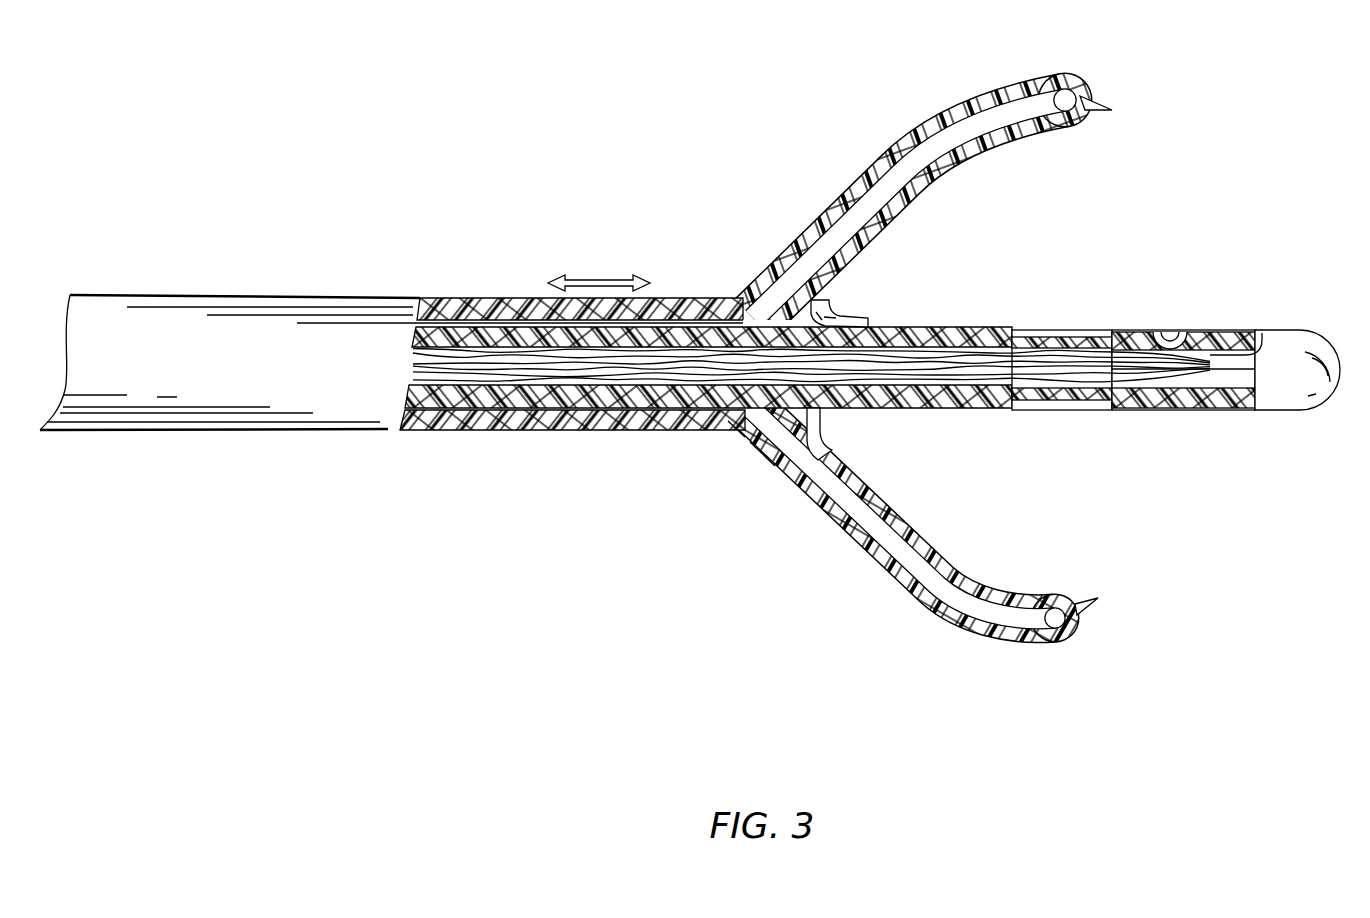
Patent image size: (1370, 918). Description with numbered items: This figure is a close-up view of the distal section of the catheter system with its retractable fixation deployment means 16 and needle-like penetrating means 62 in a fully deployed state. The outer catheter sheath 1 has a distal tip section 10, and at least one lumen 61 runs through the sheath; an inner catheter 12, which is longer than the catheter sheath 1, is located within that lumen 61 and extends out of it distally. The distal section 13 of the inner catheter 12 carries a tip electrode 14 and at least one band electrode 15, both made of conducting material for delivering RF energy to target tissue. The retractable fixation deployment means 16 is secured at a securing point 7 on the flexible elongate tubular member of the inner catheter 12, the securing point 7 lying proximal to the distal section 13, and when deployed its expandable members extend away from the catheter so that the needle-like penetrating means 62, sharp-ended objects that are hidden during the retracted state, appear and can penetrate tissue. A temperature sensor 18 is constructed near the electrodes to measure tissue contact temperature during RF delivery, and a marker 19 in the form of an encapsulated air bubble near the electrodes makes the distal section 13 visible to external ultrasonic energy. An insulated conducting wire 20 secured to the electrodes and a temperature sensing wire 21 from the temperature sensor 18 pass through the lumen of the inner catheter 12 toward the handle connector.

The catheter sheath 1 is at (450, 300).
The securing point 7 is at (873, 312).
The distal tip section 10 is at (760, 467).
The inner catheter 12 is at (520, 428).
The distal section of the inner catheter 13 is at (963, 410).
The tip electrode 14 is at (1313, 318).
The band electrode 15 is at (1085, 318).
The retractable fixation deployment means 16 is at (887, 147).
The temperature sensor 18 is at (1280, 318).
The marker 19 is at (1183, 318).
The insulated conducting wire 20 is at (922, 380).
The temperature sensing wire 21 is at (1135, 318).
The lumen 61 is at (767, 420).
The needle-like penetrating means 62 is at (1112, 98).